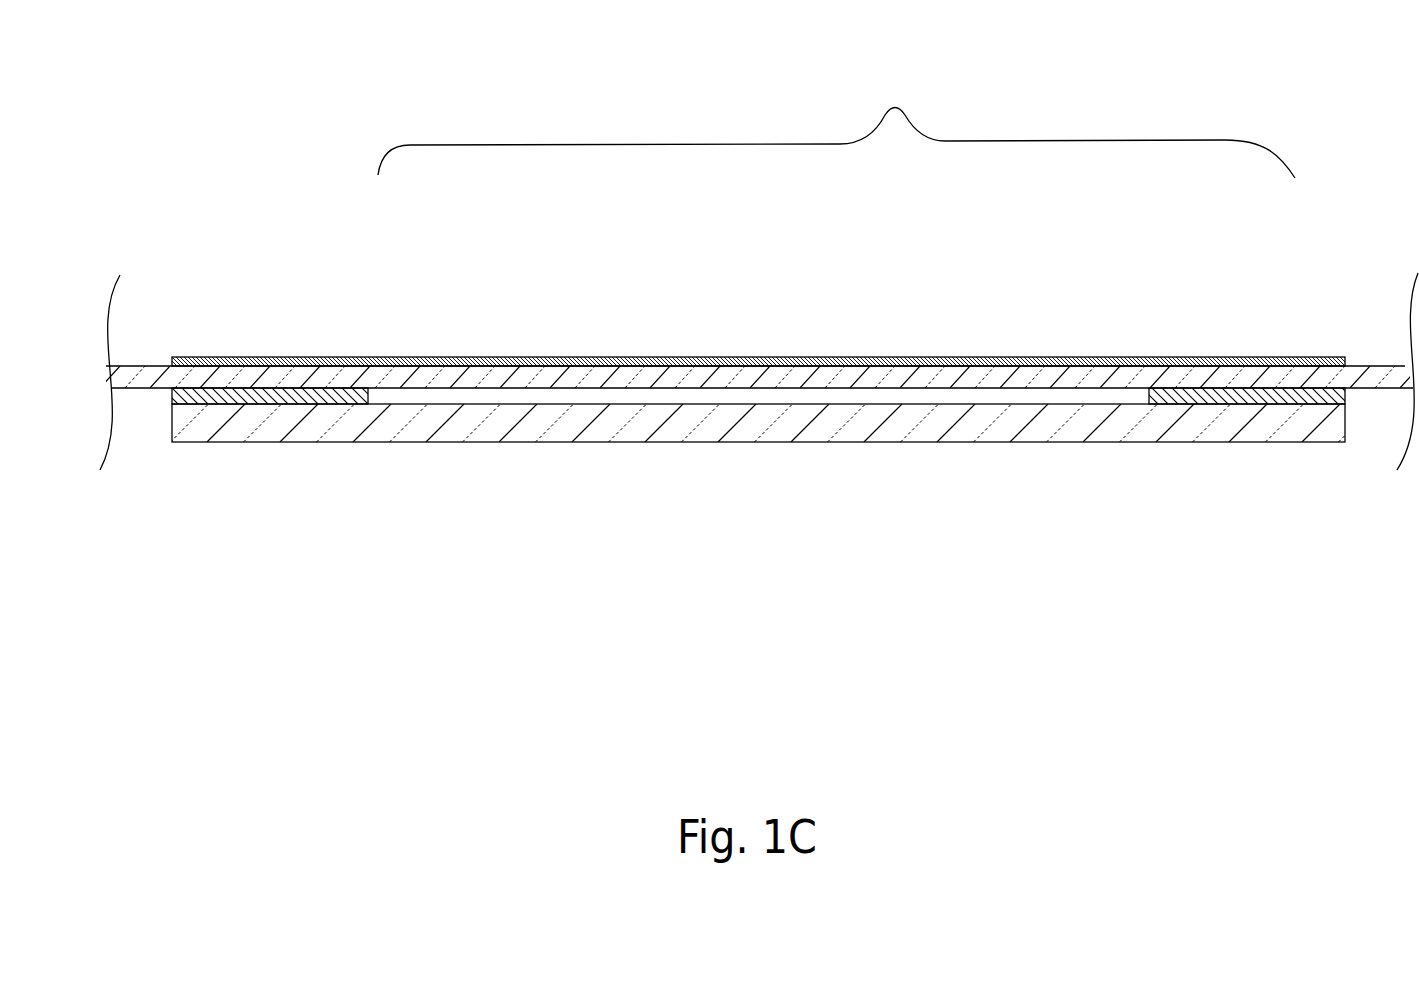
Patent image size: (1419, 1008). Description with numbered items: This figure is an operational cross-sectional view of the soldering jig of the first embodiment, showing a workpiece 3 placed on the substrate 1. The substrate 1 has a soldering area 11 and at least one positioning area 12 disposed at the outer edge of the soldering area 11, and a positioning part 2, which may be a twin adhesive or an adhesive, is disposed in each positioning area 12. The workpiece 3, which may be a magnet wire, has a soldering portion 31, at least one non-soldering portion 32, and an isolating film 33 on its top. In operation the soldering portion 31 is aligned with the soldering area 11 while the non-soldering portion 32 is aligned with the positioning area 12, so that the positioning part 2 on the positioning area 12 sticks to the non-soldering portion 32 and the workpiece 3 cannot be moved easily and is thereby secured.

The substrate 1 is at (737, 494).
The soldering area 11 is at (643, 404).
The positioning area 12 is at (263, 404).
The positioning part 2 is at (170, 392).
The workpiece 3 is at (836, 118).
The soldering portion 31 is at (705, 357).
The non-soldering portion 32 is at (265, 357).
The isolating film 33 is at (445, 357).